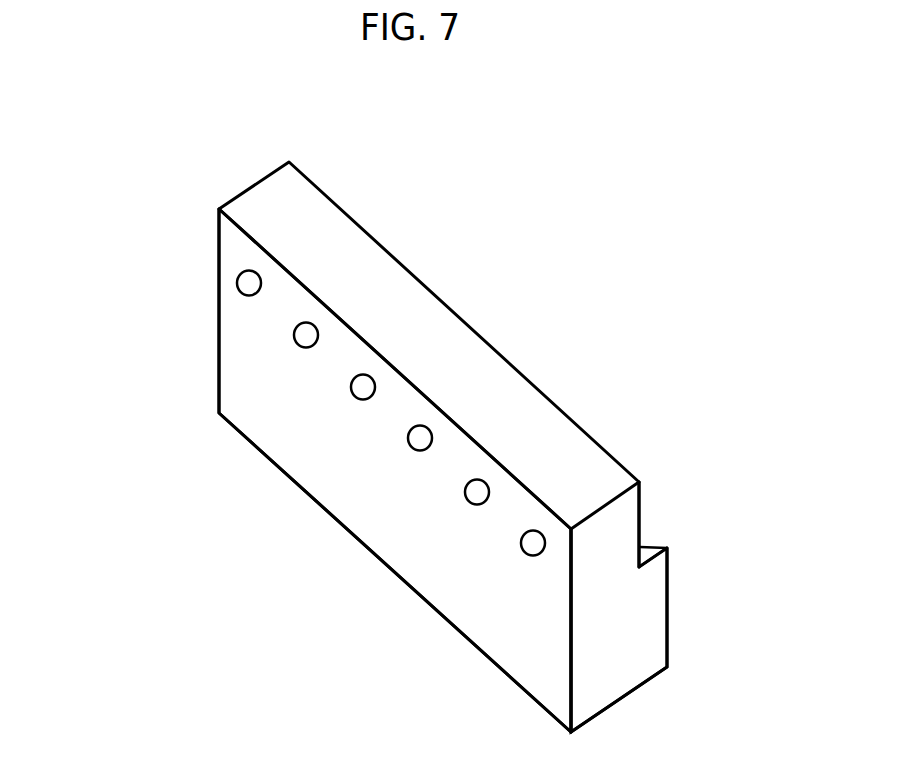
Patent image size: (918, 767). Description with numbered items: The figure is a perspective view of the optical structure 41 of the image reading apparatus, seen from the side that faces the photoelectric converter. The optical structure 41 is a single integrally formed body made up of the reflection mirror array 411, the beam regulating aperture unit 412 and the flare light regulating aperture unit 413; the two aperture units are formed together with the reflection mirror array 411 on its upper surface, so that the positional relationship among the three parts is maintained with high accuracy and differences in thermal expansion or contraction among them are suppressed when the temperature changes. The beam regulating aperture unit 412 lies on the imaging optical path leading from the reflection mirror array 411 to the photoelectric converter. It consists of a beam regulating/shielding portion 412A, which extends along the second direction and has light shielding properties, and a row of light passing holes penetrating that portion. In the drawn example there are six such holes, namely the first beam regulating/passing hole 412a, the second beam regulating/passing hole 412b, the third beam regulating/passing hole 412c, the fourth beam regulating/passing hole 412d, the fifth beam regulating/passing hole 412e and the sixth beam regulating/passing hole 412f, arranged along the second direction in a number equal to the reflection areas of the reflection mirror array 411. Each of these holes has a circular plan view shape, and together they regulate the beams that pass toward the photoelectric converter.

The optical structure 41 is at (764, 425).
The reflection mirror array 411 is at (647, 552).
The beam regulating aperture unit 412 is at (557, 563).
The flare light regulating aperture unit 413 is at (640, 505).
The beam regulating/shielding portion 412A is at (232, 258).
The first beam regulating/passing hole 412a is at (523, 545).
The second beam regulating/passing hole 412b is at (466, 494).
The third beam regulating/passing hole 412c is at (409, 440).
The fourth beam regulating/passing hole 412d is at (353, 390).
The fifth beam regulating/passing hole 412e is at (296, 337).
The sixth beam regulating/passing hole 412f is at (240, 288).